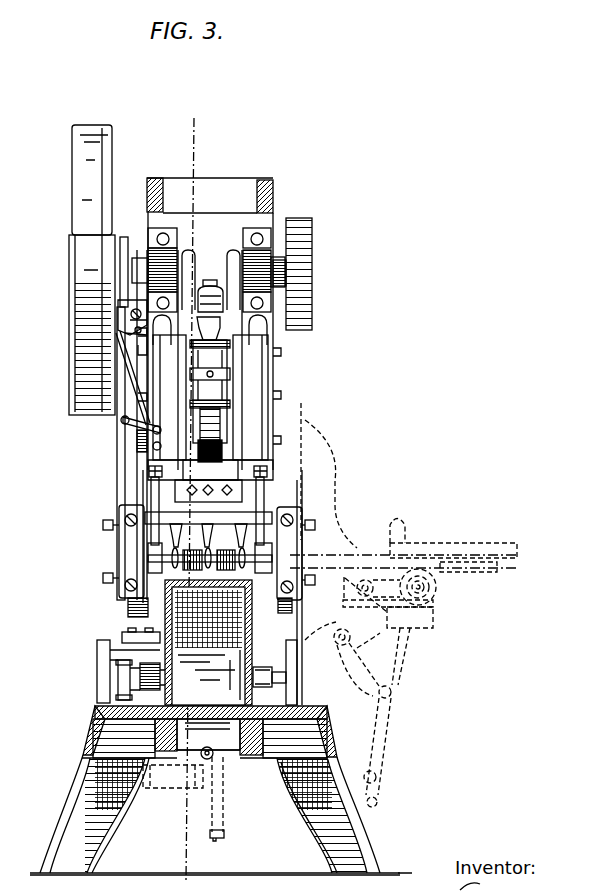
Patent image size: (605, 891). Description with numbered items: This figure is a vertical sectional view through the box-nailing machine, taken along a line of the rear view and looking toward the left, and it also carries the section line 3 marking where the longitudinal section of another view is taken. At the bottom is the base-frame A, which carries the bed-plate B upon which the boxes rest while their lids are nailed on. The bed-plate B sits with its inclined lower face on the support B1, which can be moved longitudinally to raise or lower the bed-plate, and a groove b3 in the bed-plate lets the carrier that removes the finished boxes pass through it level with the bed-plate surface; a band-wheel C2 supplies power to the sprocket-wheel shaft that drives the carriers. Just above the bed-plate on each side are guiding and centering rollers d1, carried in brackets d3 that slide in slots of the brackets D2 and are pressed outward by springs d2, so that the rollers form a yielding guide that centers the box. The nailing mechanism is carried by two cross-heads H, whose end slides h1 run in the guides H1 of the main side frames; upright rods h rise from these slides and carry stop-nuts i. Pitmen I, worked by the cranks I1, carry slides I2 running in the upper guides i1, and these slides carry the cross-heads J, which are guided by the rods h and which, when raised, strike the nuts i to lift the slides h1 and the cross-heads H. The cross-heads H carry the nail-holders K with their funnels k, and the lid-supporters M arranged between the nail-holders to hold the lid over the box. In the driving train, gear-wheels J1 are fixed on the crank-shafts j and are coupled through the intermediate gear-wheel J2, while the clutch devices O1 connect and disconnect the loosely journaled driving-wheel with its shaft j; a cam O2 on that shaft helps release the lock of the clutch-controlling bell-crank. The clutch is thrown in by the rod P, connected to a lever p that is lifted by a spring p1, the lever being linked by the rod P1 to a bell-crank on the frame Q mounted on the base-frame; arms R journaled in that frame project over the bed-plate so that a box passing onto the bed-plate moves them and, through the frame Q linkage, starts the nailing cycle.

The section line 3 3 is at (188, 495).
The intermediate gear-wheel J2 is at (76, 184).
The cranks I1 is at (232, 261).
The gear-wheels J1 is at (310, 226).
The shaft j is at (281, 262).
The cam O2 is at (126, 236).
The clutch devices O1 is at (122, 312).
The rod P is at (108, 387).
The lever p is at (128, 423).
The spring p1 is at (138, 442).
The guides i1 is at (210, 397).
The pitmen I is at (212, 392).
The slides I2 is at (224, 463).
The stop-nuts i is at (150, 473).
The upright rods h is at (152, 488).
The cross-heads J is at (208, 511).
The funnels k is at (213, 520).
The nail-holders K is at (210, 552).
The lid-supporters M is at (238, 553).
The cross-heads H is at (130, 546).
The rod P1 is at (118, 503).
The guides H1 is at (292, 548).
The slides h1 is at (128, 608).
The arms R is at (135, 640).
The frame Q is at (104, 690).
The brackets D2 is at (140, 668).
The guiding and centering rollers d1 is at (161, 672).
The springs d2 is at (287, 677).
The brackets d3 is at (298, 690).
The bed-plate B is at (228, 722).
The groove b3 is at (212, 724).
The support B1 is at (187, 740).
The band-wheel C2 is at (227, 820).
The base-frame A is at (73, 745).